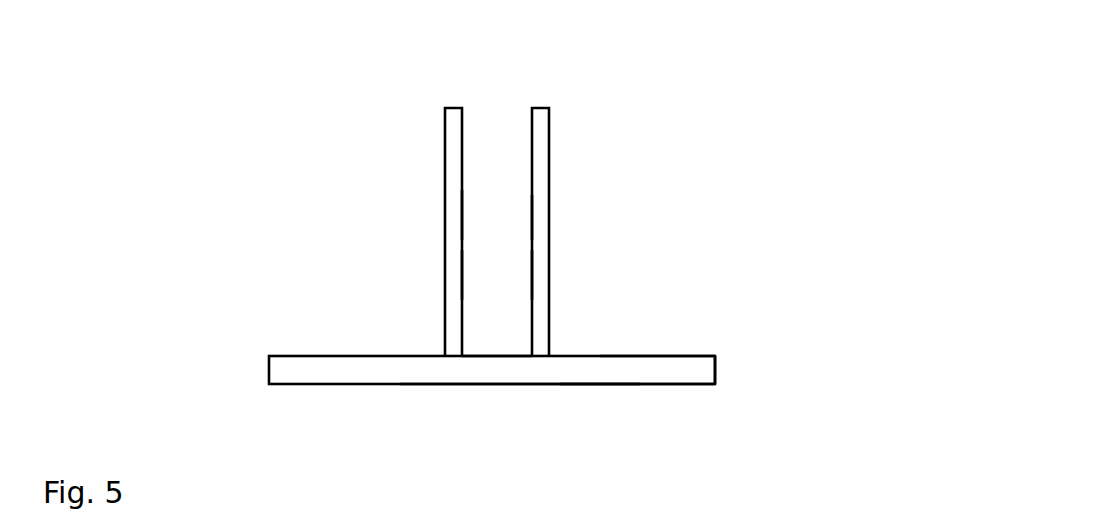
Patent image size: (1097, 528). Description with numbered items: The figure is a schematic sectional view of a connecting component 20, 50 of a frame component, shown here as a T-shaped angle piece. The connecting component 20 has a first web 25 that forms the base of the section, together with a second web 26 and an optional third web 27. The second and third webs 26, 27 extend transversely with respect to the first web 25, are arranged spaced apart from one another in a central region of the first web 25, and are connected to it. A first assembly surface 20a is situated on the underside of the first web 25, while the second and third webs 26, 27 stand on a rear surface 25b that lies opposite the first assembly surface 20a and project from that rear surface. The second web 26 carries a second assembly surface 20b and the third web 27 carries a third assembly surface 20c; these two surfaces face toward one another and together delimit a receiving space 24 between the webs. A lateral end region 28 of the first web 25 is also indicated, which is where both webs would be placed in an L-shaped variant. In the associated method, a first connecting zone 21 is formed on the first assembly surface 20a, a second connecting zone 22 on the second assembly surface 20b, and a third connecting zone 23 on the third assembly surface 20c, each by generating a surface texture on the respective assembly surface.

The connecting component 20 is at (744, 88).
The connecting component 50 is at (559, 258).
The first assembly surface 20a is at (632, 387).
The second assembly surface 20b is at (524, 270).
The third assembly surface 20c is at (468, 200).
The first connecting zone 21 is at (522, 388).
The second connecting zone 22 is at (526, 208).
The third connecting zone 23 is at (468, 255).
The receiving space 24 is at (497, 322).
The first web 25 is at (288, 372).
The rear surface 25b is at (691, 353).
The second web 26 is at (545, 178).
The third web 27 is at (455, 160).
The lateral end region 28 is at (708, 390).